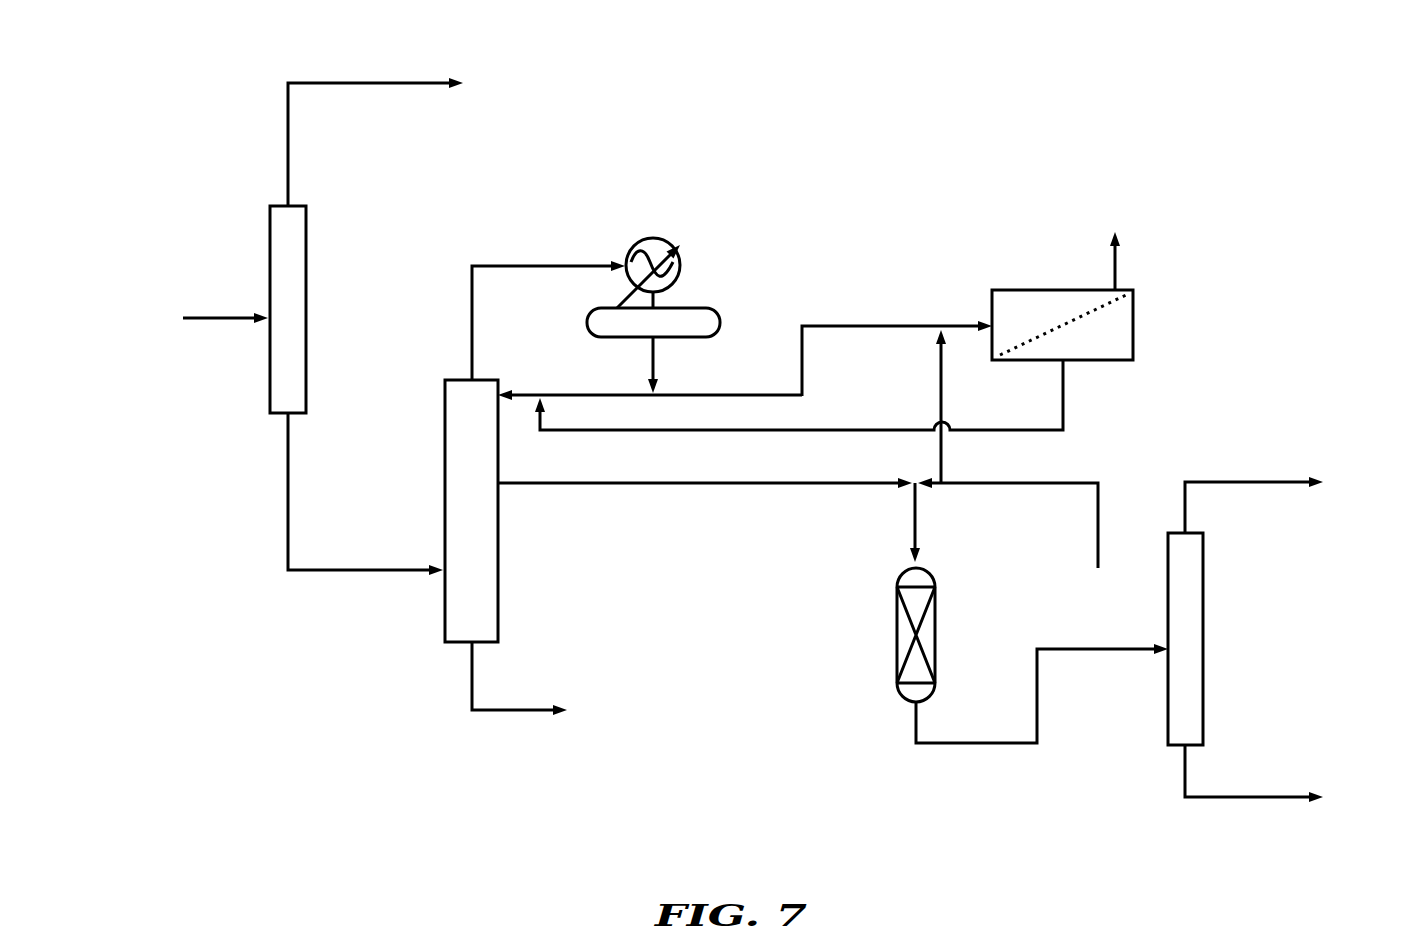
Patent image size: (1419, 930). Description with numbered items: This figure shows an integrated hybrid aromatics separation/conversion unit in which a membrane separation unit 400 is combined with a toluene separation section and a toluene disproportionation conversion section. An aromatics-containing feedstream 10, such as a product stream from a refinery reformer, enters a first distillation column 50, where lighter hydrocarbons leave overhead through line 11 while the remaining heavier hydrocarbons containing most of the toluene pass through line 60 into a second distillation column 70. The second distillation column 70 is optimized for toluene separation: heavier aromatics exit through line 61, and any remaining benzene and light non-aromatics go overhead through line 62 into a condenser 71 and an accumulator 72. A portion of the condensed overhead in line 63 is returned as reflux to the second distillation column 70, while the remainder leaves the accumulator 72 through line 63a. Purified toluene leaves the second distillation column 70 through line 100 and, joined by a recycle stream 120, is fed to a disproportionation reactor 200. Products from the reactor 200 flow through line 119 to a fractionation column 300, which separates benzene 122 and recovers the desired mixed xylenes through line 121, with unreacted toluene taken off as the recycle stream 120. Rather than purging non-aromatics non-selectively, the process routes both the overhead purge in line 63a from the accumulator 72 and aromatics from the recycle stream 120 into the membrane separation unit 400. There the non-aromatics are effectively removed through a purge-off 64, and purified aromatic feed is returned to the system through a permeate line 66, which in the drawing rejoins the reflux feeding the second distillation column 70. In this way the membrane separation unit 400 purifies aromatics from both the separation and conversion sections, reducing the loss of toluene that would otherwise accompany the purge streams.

The aromatics-containing feedstream 10 is at (213, 318).
The line 11 is at (390, 137).
The first distillation column 50 is at (306, 262).
The line 60 is at (388, 572).
The line 61 is at (536, 685).
The line 62 is at (558, 266).
The line 63 is at (632, 396).
The line 63a is at (835, 328).
The purge-off 64 is at (1115, 244).
The permeate line 66 is at (1065, 387).
The second distillation column 70 is at (489, 538).
The condenser 71 is at (658, 242).
The accumulator 72 is at (705, 308).
The toluene feed stream 100 is at (713, 486).
The line 119 is at (1005, 748).
The recycle stream 120 is at (943, 381).
The line 121 is at (1278, 781).
The benzene 122 is at (1280, 500).
The disproportionation reactor 200 is at (896, 650).
The fractionation column 300 is at (1203, 622).
The membrane separation unit 400 is at (1133, 327).